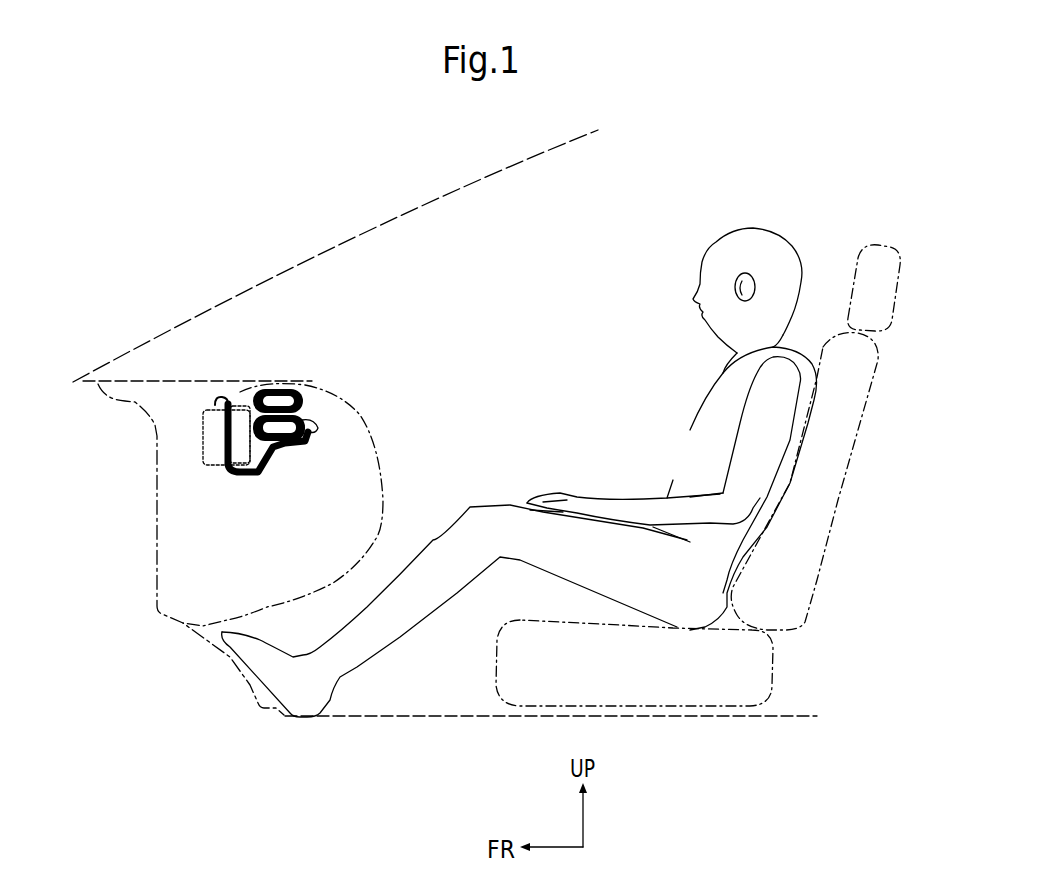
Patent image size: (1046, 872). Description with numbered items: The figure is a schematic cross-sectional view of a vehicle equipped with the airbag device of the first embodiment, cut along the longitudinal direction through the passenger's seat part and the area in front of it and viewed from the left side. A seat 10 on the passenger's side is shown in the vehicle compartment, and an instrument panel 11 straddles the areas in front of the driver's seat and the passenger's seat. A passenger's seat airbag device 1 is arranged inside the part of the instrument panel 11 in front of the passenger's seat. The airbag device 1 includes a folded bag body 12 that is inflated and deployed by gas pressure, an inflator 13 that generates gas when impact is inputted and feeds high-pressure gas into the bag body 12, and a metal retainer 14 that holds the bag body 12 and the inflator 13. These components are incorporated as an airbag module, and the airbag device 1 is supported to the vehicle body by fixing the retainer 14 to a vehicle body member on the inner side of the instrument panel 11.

The passenger's seat airbag device 1 is at (278, 373).
The seat 10 is at (835, 548).
The instrument panel 11 is at (373, 441).
The bag body 12 is at (313, 384).
The inflator 13 is at (208, 436).
The retainer 14 is at (235, 478).